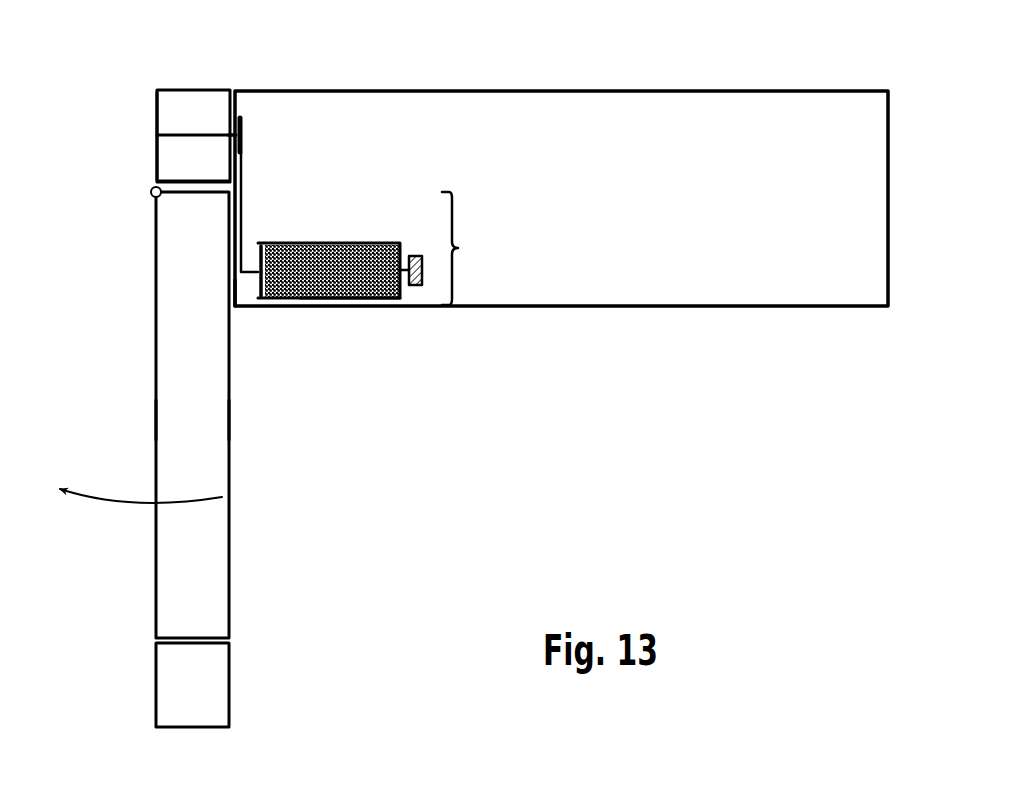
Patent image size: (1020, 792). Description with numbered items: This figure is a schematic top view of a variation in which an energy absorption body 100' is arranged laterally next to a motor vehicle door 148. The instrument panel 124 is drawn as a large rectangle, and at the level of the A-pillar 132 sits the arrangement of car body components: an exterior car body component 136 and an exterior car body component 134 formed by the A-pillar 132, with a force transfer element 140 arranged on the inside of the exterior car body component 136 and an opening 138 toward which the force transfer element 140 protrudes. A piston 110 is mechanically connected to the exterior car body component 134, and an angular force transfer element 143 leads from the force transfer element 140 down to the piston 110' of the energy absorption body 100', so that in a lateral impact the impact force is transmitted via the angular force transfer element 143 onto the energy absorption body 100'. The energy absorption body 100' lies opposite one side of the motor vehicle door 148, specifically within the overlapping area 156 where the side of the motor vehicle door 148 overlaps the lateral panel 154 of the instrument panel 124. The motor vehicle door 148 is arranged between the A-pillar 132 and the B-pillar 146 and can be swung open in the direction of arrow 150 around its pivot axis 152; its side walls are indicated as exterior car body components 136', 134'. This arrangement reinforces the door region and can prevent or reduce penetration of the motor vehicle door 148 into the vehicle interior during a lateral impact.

The instrument panel 124 is at (657, 307).
The A-pillar 132 is at (157, 82).
The force transfer element 140 is at (180, 133).
The exterior car body component 136 is at (111, 136).
The exterior car body component 134 is at (158, 172).
The opening 138 is at (225, 128).
The piston 110 is at (283, 125).
The angular force transfer element 143 is at (245, 173).
The overlapping area 156 is at (451, 248).
The piston 110' is at (329, 241).
The energy absorption body 100' is at (361, 341).
The lateral panel 154 is at (237, 283).
The motor vehicle door 148 is at (232, 598).
The pivot axis 152 is at (152, 196).
The arm side wall 136' is at (102, 424).
The arm inner wall 134' is at (283, 424).
The arrow 150 is at (127, 505).
The B-pillar 146 is at (232, 682).